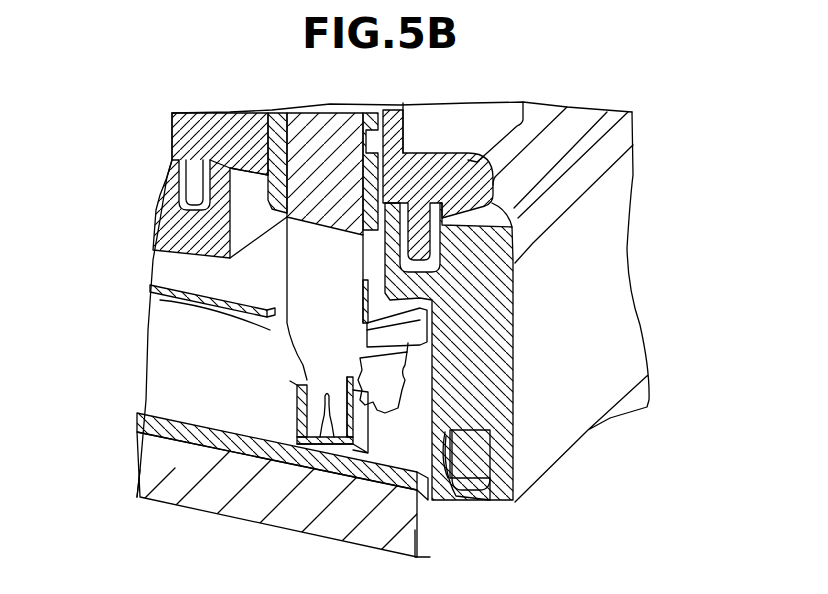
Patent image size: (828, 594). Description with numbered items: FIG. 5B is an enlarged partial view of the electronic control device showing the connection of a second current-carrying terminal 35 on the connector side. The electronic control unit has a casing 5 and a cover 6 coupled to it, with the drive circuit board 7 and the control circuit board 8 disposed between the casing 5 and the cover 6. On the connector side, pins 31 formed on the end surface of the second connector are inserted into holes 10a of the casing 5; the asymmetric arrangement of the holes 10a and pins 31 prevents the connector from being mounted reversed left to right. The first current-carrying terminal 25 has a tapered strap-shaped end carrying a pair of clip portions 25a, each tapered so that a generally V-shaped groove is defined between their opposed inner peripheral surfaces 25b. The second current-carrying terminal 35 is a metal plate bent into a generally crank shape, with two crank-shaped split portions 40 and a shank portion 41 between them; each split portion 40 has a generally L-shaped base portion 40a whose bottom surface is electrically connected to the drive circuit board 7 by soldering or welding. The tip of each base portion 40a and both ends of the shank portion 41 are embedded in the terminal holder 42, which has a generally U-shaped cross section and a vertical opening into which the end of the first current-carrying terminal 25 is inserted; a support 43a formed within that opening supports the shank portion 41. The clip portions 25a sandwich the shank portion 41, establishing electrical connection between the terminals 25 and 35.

The casing 5 is at (582, 444).
The cover 6 is at (154, 510).
The drive circuit board 7 is at (166, 444).
The control circuit board 8 is at (160, 270).
The hole 10a is at (428, 233).
The first current-carrying terminal 25 is at (162, 307).
The clip portion 25a is at (170, 437).
The inner peripheral surface 25b is at (283, 447).
The pin 31 is at (433, 222).
The second current-carrying terminal 35 is at (487, 433).
The split portion 40 is at (363, 323).
The base portion 40a is at (422, 403).
The shank portion 41 is at (313, 417).
The terminal holder 42 is at (297, 405).
The support 43a is at (322, 445).